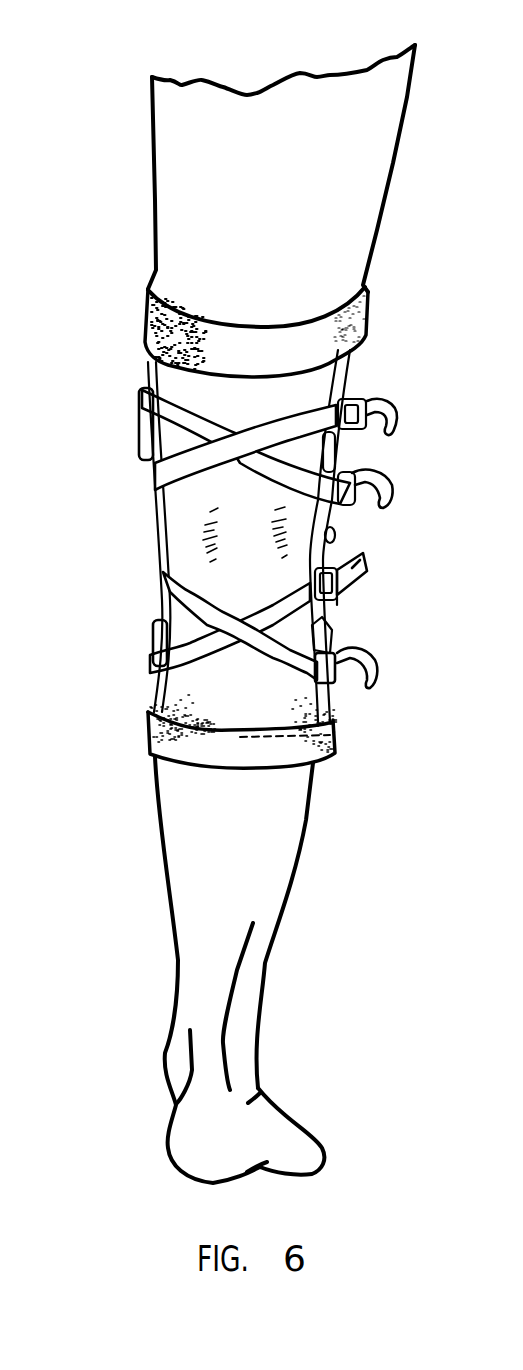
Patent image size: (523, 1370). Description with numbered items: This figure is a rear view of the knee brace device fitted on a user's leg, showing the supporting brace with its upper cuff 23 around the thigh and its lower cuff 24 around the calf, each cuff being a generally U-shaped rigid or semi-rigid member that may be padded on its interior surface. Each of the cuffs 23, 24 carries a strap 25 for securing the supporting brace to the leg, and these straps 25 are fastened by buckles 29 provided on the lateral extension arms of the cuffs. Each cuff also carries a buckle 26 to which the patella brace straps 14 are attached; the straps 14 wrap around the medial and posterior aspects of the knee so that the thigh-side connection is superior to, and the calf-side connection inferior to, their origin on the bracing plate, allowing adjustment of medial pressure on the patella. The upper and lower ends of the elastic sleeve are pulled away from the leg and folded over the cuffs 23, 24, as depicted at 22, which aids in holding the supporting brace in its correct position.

The folded-over sleeve end 22 is at (263, 359).
The lower cuff 24 is at (333, 702).
The upper cuff 23 is at (150, 362).
The patella brace straps 14 is at (383, 397).
The buckle 26 is at (353, 378).
The strap 25 is at (393, 478).
The buckle 29 is at (350, 463).